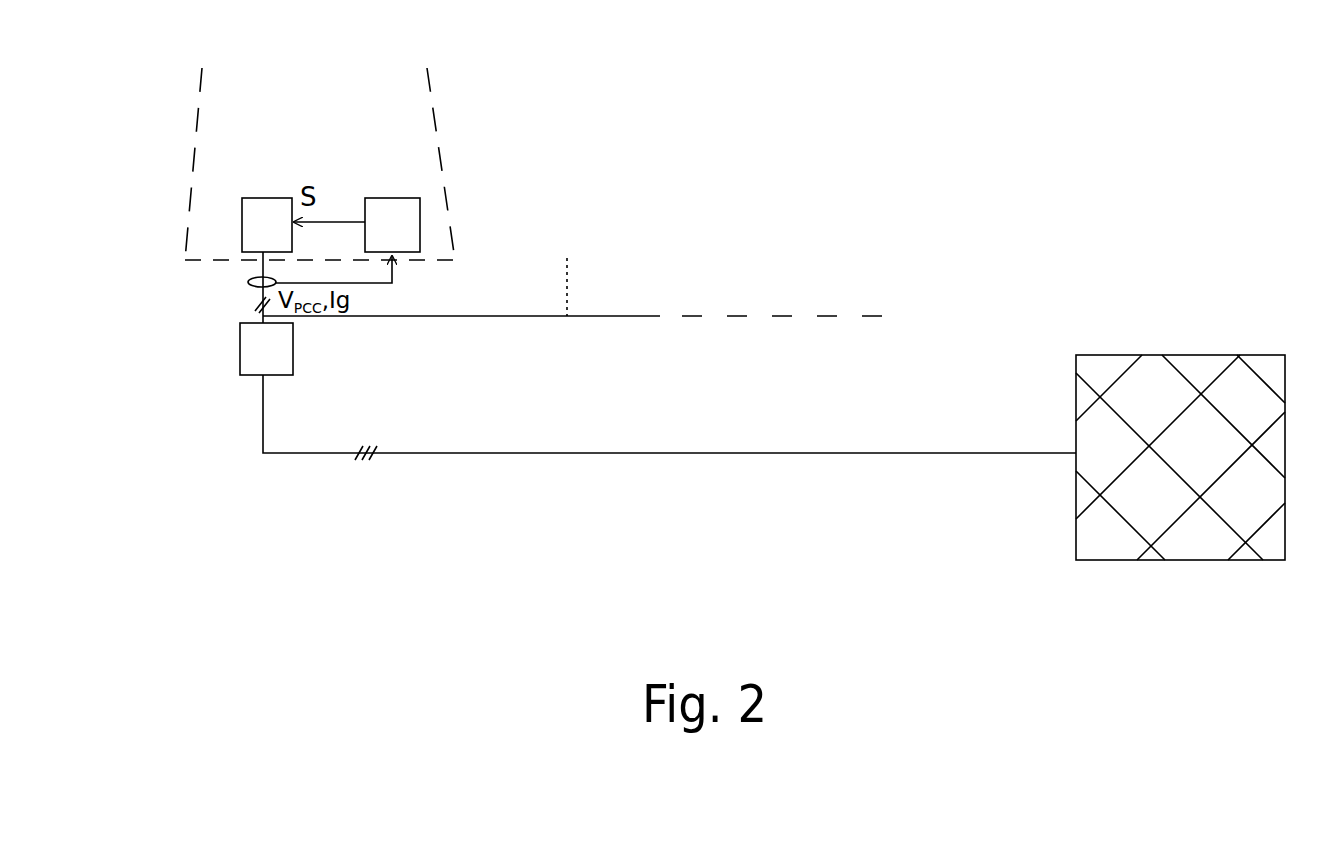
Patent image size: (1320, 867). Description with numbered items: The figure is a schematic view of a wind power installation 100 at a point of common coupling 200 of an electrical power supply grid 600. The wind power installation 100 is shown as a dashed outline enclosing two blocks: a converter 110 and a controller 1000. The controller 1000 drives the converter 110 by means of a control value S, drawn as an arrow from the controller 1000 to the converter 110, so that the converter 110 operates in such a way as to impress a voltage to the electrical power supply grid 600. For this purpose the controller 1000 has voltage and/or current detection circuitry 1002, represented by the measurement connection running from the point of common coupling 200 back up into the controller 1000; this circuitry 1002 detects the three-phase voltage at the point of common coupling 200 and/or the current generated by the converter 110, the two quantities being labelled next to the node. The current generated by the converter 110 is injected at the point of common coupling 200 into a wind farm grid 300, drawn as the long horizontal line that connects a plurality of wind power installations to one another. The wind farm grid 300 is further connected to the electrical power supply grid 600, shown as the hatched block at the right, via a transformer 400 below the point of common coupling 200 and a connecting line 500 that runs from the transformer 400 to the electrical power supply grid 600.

The wind power installation 100 is at (474, 98).
The converter 110 is at (262, 198).
The controller 1000 is at (385, 198).
The voltage and/or current detection circuitry 1002 is at (362, 289).
The point of common coupling 200 is at (260, 262).
The wind farm grid 300 is at (522, 316).
The transformer 400 is at (240, 358).
The connecting line 500 is at (517, 453).
The electrical power supply grid 600 is at (1200, 355).